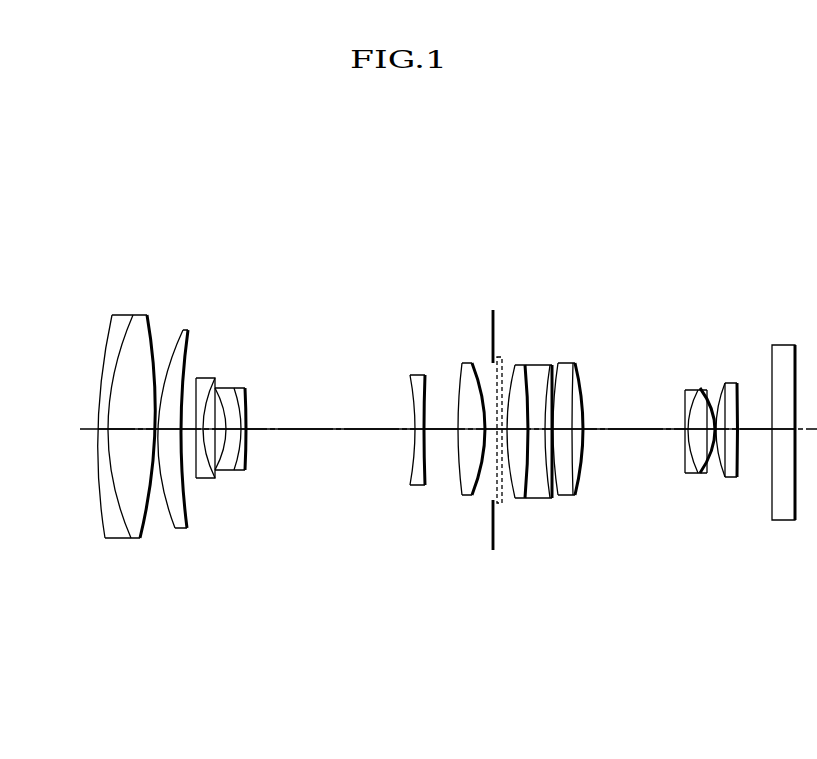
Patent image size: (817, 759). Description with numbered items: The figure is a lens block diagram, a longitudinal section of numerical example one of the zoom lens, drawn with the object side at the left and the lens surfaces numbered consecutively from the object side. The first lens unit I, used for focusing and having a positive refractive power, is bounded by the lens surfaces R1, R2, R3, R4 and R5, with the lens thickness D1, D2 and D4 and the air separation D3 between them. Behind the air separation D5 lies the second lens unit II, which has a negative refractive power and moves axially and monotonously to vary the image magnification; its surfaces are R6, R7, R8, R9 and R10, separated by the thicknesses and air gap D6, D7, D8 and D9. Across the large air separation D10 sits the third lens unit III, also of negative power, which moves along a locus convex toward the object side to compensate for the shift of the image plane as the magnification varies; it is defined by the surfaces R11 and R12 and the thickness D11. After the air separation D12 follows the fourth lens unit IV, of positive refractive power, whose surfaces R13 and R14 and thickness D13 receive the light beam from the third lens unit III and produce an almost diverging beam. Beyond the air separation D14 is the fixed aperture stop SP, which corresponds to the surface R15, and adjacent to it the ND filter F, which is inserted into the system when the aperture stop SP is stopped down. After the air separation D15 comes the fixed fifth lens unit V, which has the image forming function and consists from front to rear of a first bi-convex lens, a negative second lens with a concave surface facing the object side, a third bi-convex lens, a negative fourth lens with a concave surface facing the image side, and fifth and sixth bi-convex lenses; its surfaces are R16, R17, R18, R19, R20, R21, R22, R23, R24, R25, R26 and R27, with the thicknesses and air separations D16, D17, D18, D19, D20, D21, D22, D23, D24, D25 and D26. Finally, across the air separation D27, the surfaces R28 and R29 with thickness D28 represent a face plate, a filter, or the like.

The first lens unit I is at (178, 172).
The second lens unit II is at (305, 172).
The third lens unit III is at (423, 175).
The fourth lens unit IV is at (502, 175).
The fifth lens unit V is at (748, 176).
The aperture stop SP is at (492, 550).
The ND filter F is at (497, 503).
The first lens surface R1 is at (104, 345).
The second lens surface R2 is at (132, 318).
The third lens surface R3 is at (148, 318).
The fourth lens surface R4 is at (185, 331).
The fifth lens surface R5 is at (190, 332).
The sixth lens surface R6 is at (198, 378).
The seventh lens surface R7 is at (215, 378).
The eighth lens surface R8 is at (218, 388).
The ninth lens surface R9 is at (236, 388).
The tenth lens surface R10 is at (246, 388).
The eleventh lens surface R11 is at (410, 375).
The twelfth lens surface R12 is at (424, 375).
The thirteenth lens surface R13 is at (462, 363).
The fourteenth lens surface R14 is at (472, 363).
The fifteenth surface R15 is at (493, 312).
The sixteenth lens surface R16 is at (515, 365).
The seventeenth lens surface R17 is at (525, 365).
The eighteenth lens surface R18 is at (546, 365).
The nineteenth lens surface R19 is at (558, 363).
The twentieth lens surface R20 is at (575, 363).
The twenty-first lens surface R21 is at (583, 365).
The twenty-second lens surface R22 is at (685, 390).
The twenty-third lens surface R23 is at (697, 390).
The twenty-fourth lens surface R24 is at (701, 388).
The twenty-fifth lens surface R25 is at (725, 383).
The twenty-sixth lens surface R26 is at (728, 383).
The twenty-seventh lens surface R27 is at (737, 383).
The face plate surface R28 is at (773, 345).
The face plate surface R29 is at (796, 345).
The first lens thickness D1 is at (102, 430).
The second lens thickness D2 is at (131, 430).
The third air separation D3 is at (157, 430).
The fourth lens thickness D4 is at (170, 430).
The fifth air separation D5 is at (189, 430).
The sixth lens thickness D6 is at (200, 430).
The seventh air separation D7 is at (214, 430).
The eighth lens thickness D8 is at (233, 430).
The ninth lens thickness D9 is at (243, 430).
The tenth air separation D10 is at (307, 432).
The eleventh lens thickness D11 is at (419, 432).
The twelfth air separation D12 is at (440, 432).
The thirteenth lens thickness D13 is at (470, 432).
The fourteenth air separation D14 is at (488, 432).
The fifteenth air separation D15 is at (503, 432).
The sixteenth lens thickness D16 is at (516, 432).
The seventeenth lens thickness D17 is at (535, 432).
The eighteenth air separation D18 is at (548, 432).
The nineteenth lens thickness D19 is at (563, 432).
The twentieth lens thickness D20 is at (578, 432).
The twenty-first air separation D21 is at (630, 432).
The twenty-second lens thickness D22 is at (687, 432).
The twenty-third lens thickness D23 is at (700, 432).
The twenty-fourth air separation D24 is at (715, 432).
The twenty-fifth lens thickness D25 is at (721, 432).
The twenty-sixth lens thickness D26 is at (731, 432).
The twenty-seventh air separation D27 is at (755, 433).
The twenty-eighth thickness D28 is at (784, 432).